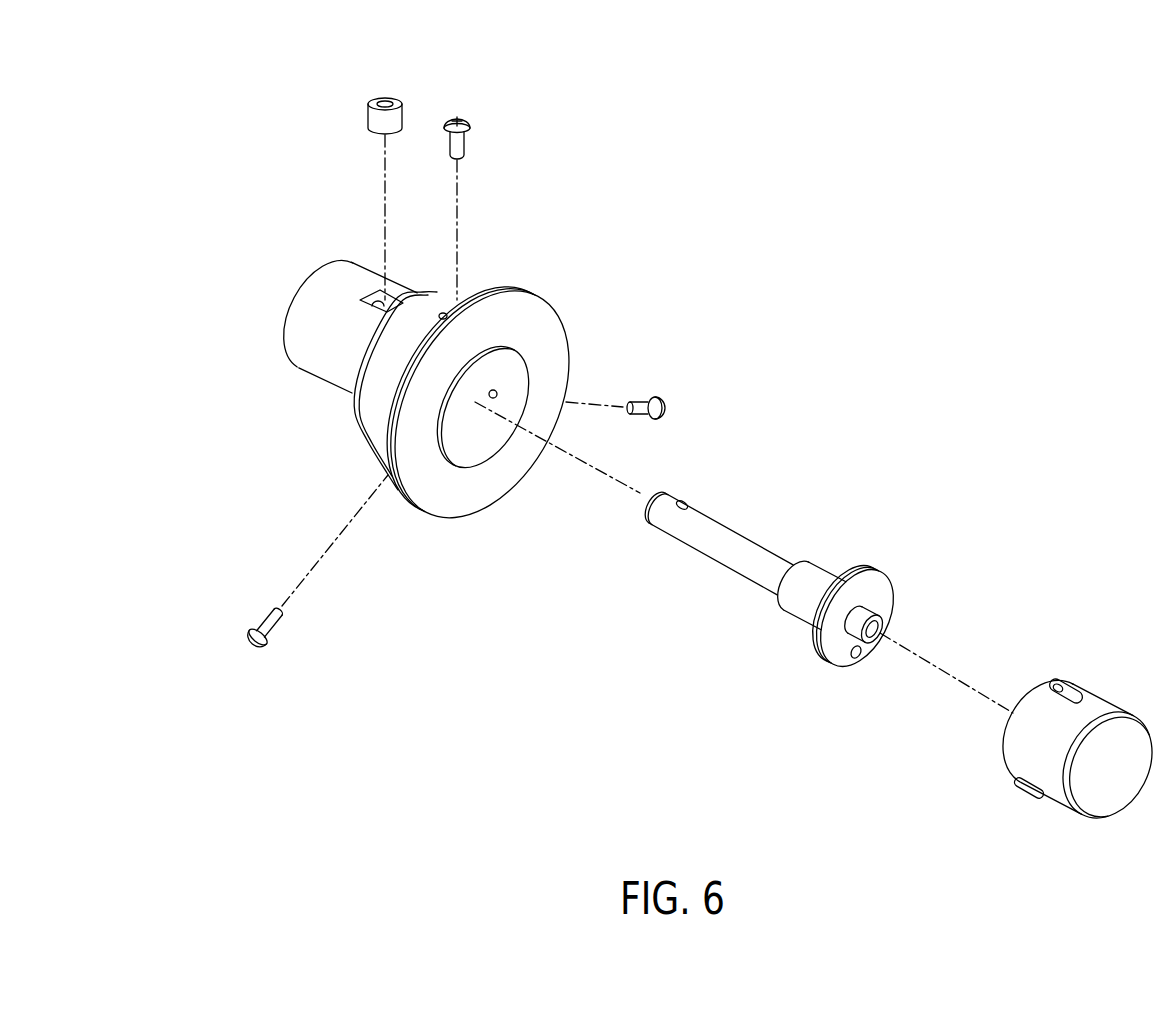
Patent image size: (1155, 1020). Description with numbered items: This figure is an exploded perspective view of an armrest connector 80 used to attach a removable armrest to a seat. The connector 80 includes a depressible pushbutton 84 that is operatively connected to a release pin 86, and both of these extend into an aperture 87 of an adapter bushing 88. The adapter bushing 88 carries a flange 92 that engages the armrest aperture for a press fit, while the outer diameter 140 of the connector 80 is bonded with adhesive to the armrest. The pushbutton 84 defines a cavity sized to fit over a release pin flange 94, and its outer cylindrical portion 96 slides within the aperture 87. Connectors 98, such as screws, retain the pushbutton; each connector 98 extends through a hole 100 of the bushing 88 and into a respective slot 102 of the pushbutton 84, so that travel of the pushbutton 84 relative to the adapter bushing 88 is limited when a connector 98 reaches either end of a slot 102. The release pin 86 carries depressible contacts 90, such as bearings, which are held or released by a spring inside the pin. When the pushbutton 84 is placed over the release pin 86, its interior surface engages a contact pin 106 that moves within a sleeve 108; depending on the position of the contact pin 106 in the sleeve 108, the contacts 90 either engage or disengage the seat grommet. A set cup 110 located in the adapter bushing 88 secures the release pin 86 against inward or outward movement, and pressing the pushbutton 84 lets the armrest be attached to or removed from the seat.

The connector 80 is at (927, 248).
The pushbutton 84 is at (1072, 826).
The release pin 86 is at (716, 607).
The aperture 87 is at (463, 433).
The adapter bushing 88 is at (417, 546).
The depressible contacts 90 is at (685, 502).
The flange 92 is at (559, 312).
The release pin flange 94 is at (898, 575).
The outer cylindrical portion 96 is at (1098, 706).
The connector 98 is at (463, 119).
The hole 100 is at (440, 319).
The slot 102 is at (1059, 686).
The contact pin 106 is at (845, 641).
The sleeve 108 is at (751, 556).
The set cup 110 is at (361, 101).
The outer diameter 140 is at (316, 311).